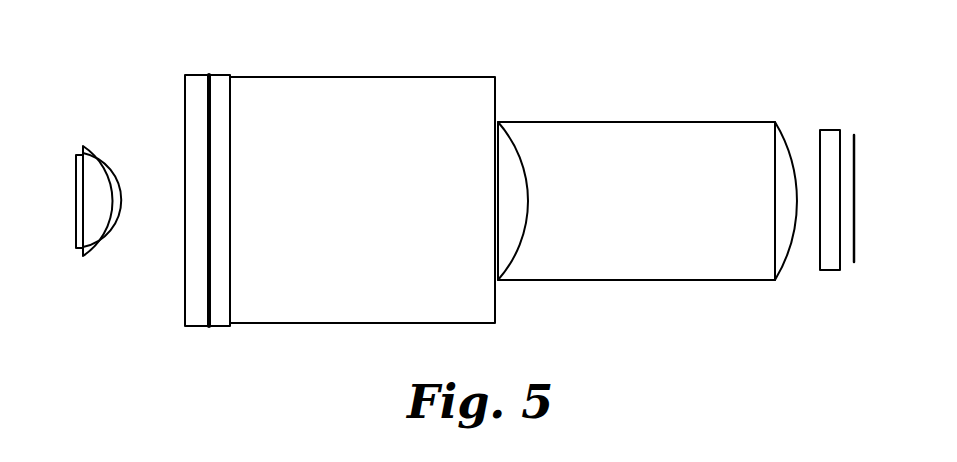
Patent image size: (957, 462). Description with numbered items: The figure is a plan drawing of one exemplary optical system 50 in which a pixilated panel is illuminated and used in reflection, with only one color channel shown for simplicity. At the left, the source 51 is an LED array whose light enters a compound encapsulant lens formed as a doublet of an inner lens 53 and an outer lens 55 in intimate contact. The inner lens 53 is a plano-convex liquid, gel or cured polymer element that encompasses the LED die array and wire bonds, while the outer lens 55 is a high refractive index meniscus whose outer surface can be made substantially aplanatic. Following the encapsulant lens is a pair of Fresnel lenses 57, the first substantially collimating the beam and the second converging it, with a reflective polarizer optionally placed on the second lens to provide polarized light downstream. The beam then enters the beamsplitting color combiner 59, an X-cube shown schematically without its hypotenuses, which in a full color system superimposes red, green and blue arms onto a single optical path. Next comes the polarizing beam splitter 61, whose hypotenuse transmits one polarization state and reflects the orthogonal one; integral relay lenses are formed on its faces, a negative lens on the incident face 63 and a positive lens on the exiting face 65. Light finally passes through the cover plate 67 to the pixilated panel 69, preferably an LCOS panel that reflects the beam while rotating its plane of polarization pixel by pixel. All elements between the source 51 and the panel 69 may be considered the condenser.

The optical system 50 is at (131, 54).
The source 51 is at (75, 200).
The inner lens 53 is at (88, 250).
The outer lens 55 is at (123, 268).
The pair of Fresnel lenses 57 is at (230, 333).
The beamsplitting color combiner 59 is at (402, 325).
The polarizing beam splitter 61 is at (675, 282).
The incident face 63 is at (503, 268).
The exiting face 65 is at (778, 264).
The cover plate 67 is at (828, 271).
The pixilated panel 69 is at (855, 253).